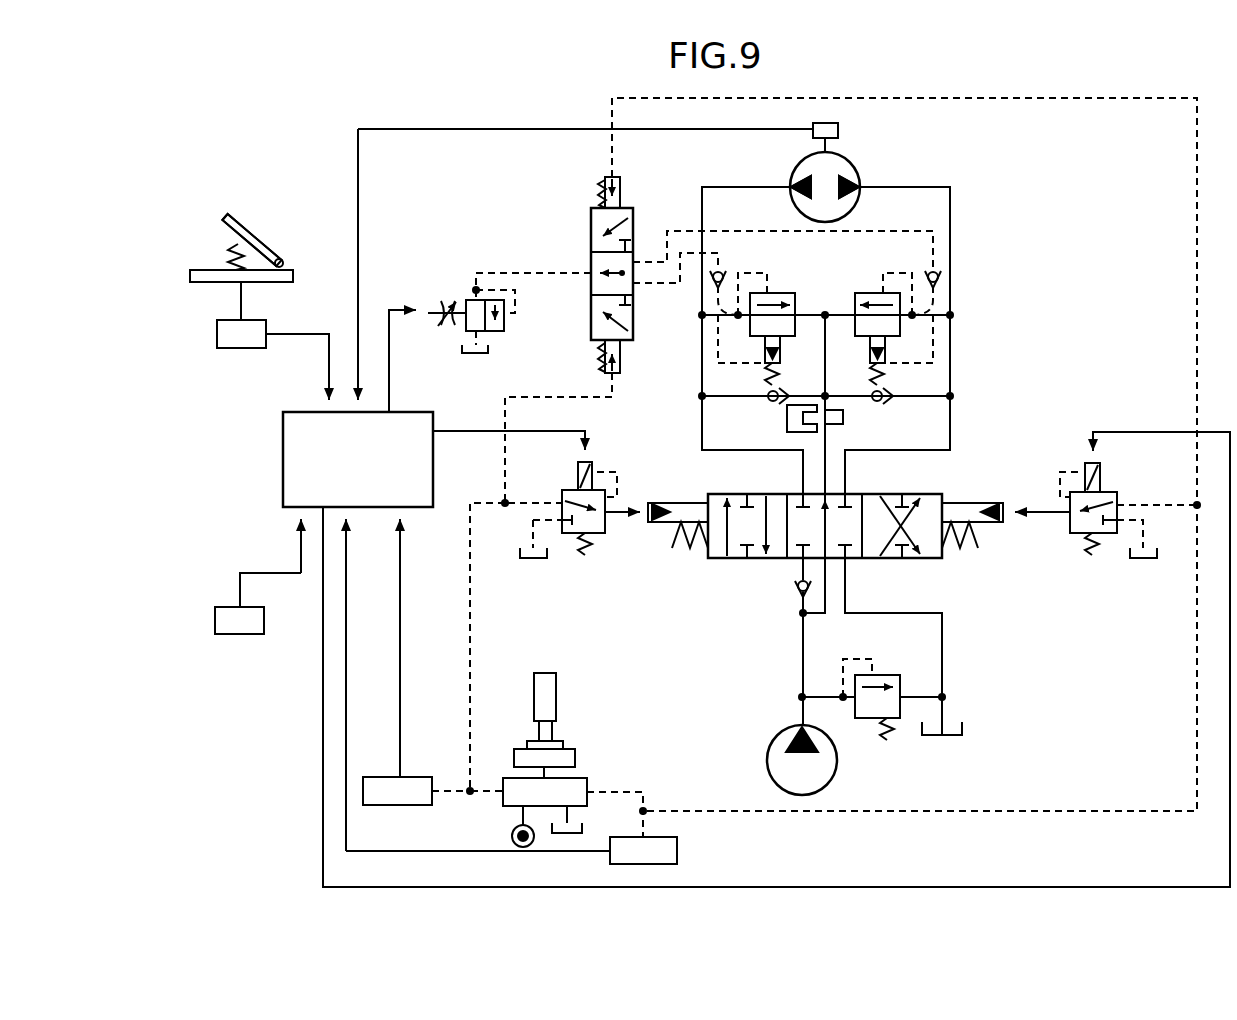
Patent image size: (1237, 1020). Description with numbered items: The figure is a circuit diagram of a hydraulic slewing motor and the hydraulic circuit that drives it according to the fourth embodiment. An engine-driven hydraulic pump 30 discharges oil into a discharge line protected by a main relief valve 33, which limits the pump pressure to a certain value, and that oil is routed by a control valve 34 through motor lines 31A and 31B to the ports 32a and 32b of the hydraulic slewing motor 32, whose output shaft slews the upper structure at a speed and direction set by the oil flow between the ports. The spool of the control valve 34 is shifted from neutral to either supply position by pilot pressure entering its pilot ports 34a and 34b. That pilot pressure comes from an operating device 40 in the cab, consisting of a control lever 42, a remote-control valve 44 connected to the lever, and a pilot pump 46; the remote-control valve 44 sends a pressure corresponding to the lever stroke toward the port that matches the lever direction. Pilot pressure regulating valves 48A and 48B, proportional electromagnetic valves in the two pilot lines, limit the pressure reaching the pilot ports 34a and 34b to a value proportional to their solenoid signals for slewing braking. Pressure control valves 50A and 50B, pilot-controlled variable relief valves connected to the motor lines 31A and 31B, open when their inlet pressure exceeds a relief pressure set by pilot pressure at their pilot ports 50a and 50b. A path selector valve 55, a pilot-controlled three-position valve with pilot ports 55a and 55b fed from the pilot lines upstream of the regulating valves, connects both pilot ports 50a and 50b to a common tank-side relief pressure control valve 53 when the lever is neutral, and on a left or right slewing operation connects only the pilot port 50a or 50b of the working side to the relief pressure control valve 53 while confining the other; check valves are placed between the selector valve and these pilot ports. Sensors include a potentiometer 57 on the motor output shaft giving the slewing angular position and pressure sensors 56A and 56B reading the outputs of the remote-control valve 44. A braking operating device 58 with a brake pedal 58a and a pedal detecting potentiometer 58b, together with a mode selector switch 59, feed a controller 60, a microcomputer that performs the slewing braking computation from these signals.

The hydraulic pump 30 is at (830, 765).
The motor line 31A is at (702, 188).
The motor line 31B is at (953, 190).
The hydraulic slewing motor 32 is at (850, 165).
The port 32a is at (792, 180).
The port 32b is at (862, 180).
The main relief valve 33 is at (888, 675).
The control valve 34 is at (980, 574).
The pilot port 34a is at (690, 482).
The pilot port 34b is at (1000, 501).
The operating device 40 is at (610, 757).
The control lever 42 is at (557, 702).
The remote-control valve 44 is at (505, 806).
The pilot pump 46 is at (531, 843).
The pilot pressure regulating valve 48A is at (609, 458).
The pilot pressure regulating valve 48B is at (1118, 484).
The pressure control valve 50A is at (778, 276).
The pressure control valve 50B is at (915, 266).
The pilot port 50a is at (765, 348).
The pilot port 50b is at (886, 348).
The relief pressure control valve 53 is at (504, 325).
The path selector valve 55 is at (563, 213).
The pilot port 55a is at (600, 367).
The pilot port 55b is at (600, 185).
The pressure sensor 56A is at (418, 777).
The pressure sensor 56B is at (677, 850).
The potentiometer 57 is at (838, 130).
The braking operating device 58 is at (268, 212).
The brake pedal 58a is at (228, 222).
The pedal detecting potentiometer 58b is at (241, 348).
The mode selector switch 59 is at (240, 634).
The controller 60 is at (312, 412).